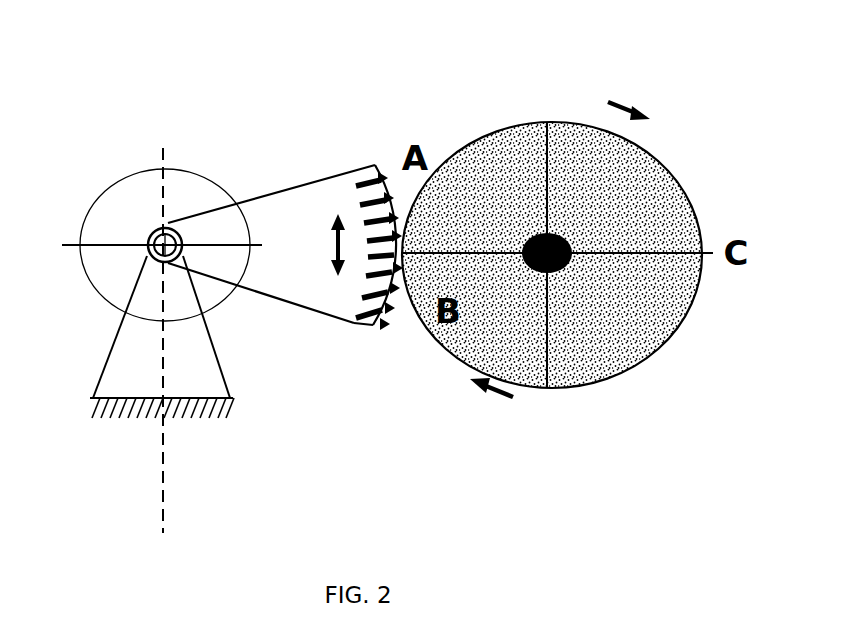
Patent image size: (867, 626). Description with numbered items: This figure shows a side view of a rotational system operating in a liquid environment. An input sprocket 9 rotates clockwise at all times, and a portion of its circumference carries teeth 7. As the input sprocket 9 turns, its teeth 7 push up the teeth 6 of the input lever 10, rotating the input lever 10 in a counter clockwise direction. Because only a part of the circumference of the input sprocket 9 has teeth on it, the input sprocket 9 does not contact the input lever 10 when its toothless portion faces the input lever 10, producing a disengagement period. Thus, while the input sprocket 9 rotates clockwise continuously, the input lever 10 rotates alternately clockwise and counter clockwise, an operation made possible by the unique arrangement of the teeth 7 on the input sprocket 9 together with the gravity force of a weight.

The input lever 10 is at (318, 198).
The input sprocket 9 is at (545, 133).
The teeth 6 is at (362, 324).
The teeth 7 is at (416, 325).